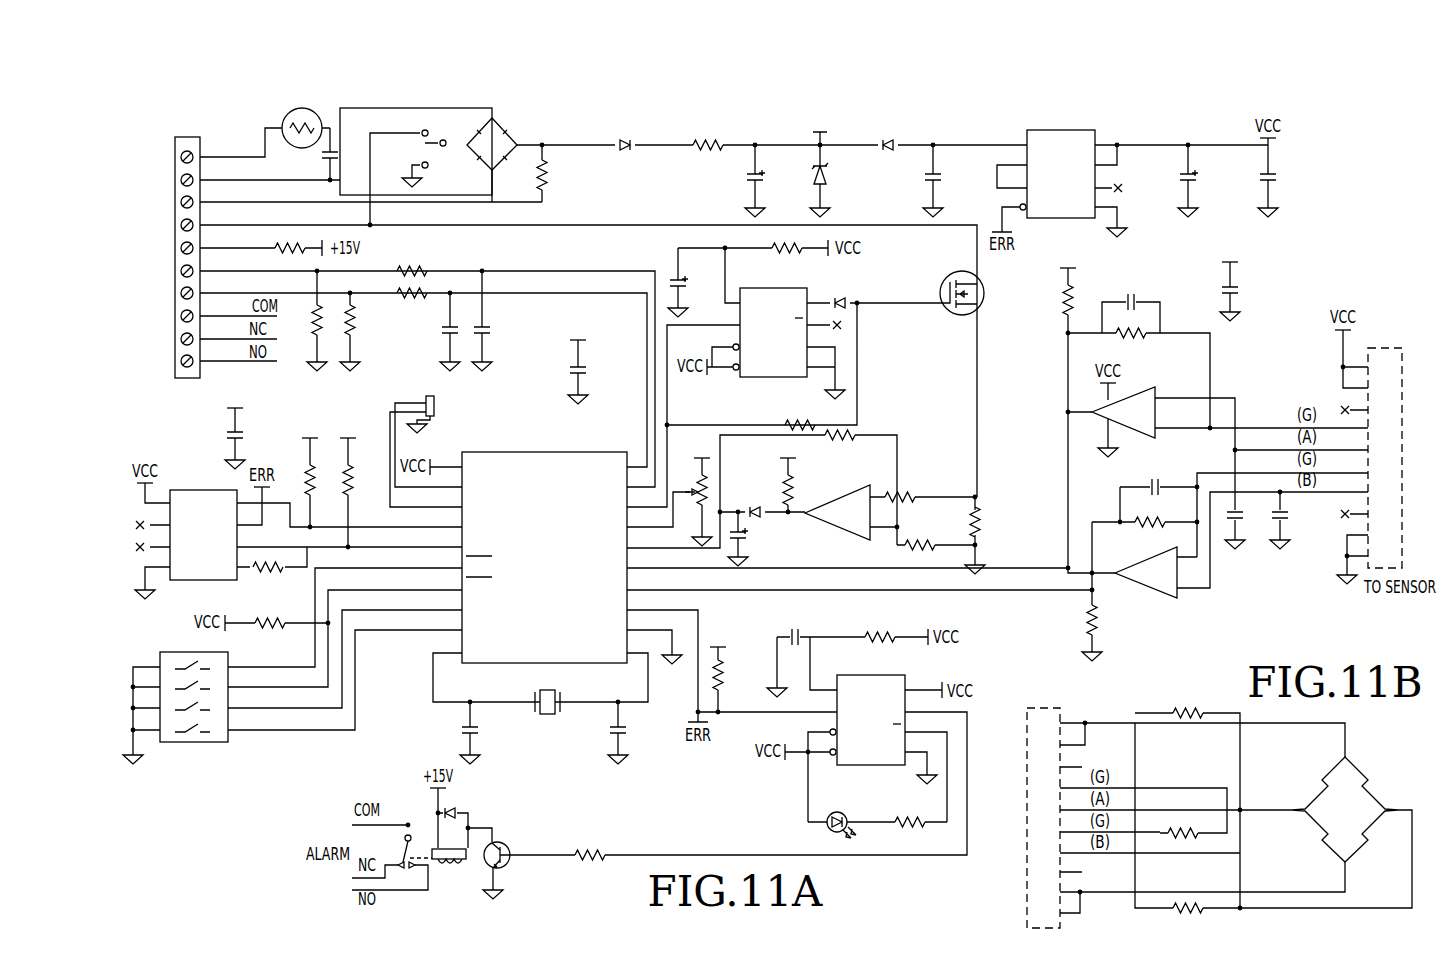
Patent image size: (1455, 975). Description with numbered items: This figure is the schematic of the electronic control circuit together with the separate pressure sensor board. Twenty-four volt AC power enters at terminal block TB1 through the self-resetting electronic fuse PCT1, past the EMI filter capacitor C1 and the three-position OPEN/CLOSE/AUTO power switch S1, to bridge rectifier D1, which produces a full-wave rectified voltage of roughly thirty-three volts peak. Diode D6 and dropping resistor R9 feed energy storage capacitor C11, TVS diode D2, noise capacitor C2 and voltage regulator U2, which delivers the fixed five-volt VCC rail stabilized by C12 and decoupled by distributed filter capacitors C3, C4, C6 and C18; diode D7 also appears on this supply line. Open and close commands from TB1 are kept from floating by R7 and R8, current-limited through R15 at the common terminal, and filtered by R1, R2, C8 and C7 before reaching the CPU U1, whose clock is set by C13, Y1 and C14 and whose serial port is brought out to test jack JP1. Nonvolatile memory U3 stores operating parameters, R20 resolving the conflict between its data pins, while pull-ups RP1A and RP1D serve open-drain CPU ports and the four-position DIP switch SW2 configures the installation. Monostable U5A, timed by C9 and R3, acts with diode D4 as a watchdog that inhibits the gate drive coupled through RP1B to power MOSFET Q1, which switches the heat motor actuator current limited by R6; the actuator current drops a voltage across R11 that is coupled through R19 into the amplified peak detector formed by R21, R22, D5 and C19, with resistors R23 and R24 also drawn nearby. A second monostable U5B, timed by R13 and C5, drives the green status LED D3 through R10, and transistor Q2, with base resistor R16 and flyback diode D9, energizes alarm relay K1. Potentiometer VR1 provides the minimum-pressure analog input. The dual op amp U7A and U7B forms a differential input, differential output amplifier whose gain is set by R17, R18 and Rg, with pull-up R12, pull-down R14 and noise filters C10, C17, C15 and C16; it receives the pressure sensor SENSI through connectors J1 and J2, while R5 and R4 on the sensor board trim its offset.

In FIG. 11A, the terminal block TB1 is at (175, 257).
In FIG. 11A, the electronic fuse PCT1 is at (298, 125).
In FIG. 11A, the EMI filter capacitor C1 is at (345, 154).
In FIG. 11A, the three position power switch S1 is at (416, 151).
In FIG. 11A, the bridge rectifier D1 is at (495, 156).
In FIG. 11A, the current limiting resistor R6 is at (557, 176).
In FIG. 11A, the blocking diode D6 is at (624, 126).
In FIG. 11A, the voltage-dropping resistor R9 is at (708, 134).
In FIG. 11A, the energy storage capacitor C11 is at (777, 176).
In FIG. 11A, the transient voltage suppressor diode D2 is at (842, 170).
In FIG. 11A, the zener diode D7 is at (888, 134).
In FIG. 11A, the noise suppression capacitor C2 is at (948, 176).
In FIG. 11A, the voltage regulator U2 is at (963, 446).
In FIG. 11A, the energy storage capacitor C12 is at (1209, 176).
In FIG. 11A, the distributed filter capacitor C3 is at (1281, 173).
In FIG. 11A, the current limiting resistor R15 is at (289, 248).
In FIG. 11A, the filter resistor R1 is at (412, 251).
In FIG. 11A, the filter resistor R2 is at (412, 312).
In FIG. 11A, the pull-down resistor R7 is at (329, 316).
In FIG. 11A, the pull-down resistor R8 is at (362, 327).
In FIG. 11A, the filter capacitor C7 is at (436, 327).
In FIG. 11A, the filter capacitor C8 is at (495, 316).
In FIG. 11A, the timing resistor R3 is at (787, 248).
In FIG. 11A, the timing capacitor C9 is at (697, 280).
In FIG. 11A, the retriggerable monostable multivibrator U5A is at (780, 332).
In FIG. 11A, the diode D4 is at (843, 283).
In FIG. 11A, the gate coupling resistor RP1B is at (588, 474).
In FIG. 11A, the N channel power MOSFET Q1 is at (954, 309).
In FIG. 11A, the pull-up resistor R12 is at (1082, 280).
In FIG. 11A, the noise filter capacitor C10 is at (1132, 293).
In FIG. 11A, the gain setting resistor R17 is at (1131, 331).
In FIG. 11A, the distributed filter capacitor C4 is at (1243, 275).
In FIG. 11A, the distributed filter capacitor C18 is at (593, 356).
In FIG. 11A, the test jack JP1 is at (439, 404).
In FIG. 11A, the CPU U1 is at (544, 546).
In FIG. 11A, the distributed filter capacitor C6 is at (247, 422).
In FIG. 11A, the nonvolatile memory device U3 is at (193, 535).
In FIG. 11A, the pull-up resistor RP1A is at (324, 471).
In FIG. 11A, the conflict resolving resistor R20 is at (270, 576).
In FIG. 11A, the pull-up resistor RP1D is at (270, 621).
In FIG. 11A, the four position DIP switch SW2 is at (194, 698).
In FIG. 11A, the potentiometer VR1 is at (692, 486).
In FIG. 11A, the peak detector diode D5 is at (752, 491).
In FIG. 11A, the peak detector capacitor C19 is at (769, 536).
In FIG. 11A, the resistor R24 is at (802, 473).
In FIG. 11A, the gain resistor R21 is at (845, 443).
In FIG. 11A, the retriggerable monostable multivibrator U5B is at (843, 509).
In FIG. 11A, the input resistor R19 is at (911, 495).
In FIG. 11A, the gain resistor R22 is at (920, 543).
In FIG. 11A, the current sense resistor R11 is at (994, 519).
In FIG. 11A, the resistor R23 is at (733, 668).
In FIG. 11A, the timing capacitor C5 is at (798, 633).
In FIG. 11A, the timing resistor R13 is at (879, 636).
In FIG. 11A, the green status LED D3 is at (828, 817).
In FIG. 11A, the LED current resistor R10 is at (907, 820).
In FIG. 11A, the flyback diode D9 is at (485, 802).
In FIG. 11A, the alarm relay K1 is at (449, 856).
In FIG. 11A, the switching transistor Q2 is at (524, 857).
In FIG. 11A, the base resistor R16 is at (589, 853).
In FIG. 11A, the crystal load capacitor C13 is at (452, 728).
In FIG. 11A, the crystal load capacitor C14 is at (636, 728).
In FIG. 11A, the crystal Y1 is at (548, 726).
In FIG. 11A, the operational amplifier U7A is at (1120, 412).
In FIG. 11A, the noise filter capacitor C17 is at (1154, 479).
In FIG. 11A, the gain setting resistor R18 is at (1150, 520).
In FIG. 11A, the operational amplifier U7B is at (1143, 571).
In FIG. 11A, the pull-down resistor R14 is at (1110, 621).
In FIG. 11A, the noise filter capacitor C15 is at (1252, 522).
In FIG. 11A, the noise filter capacitor C16 is at (1297, 522).
In FIG. 11A, the power connector J1 is at (1371, 446).
In FIG. 11B, the signal connector J2 is at (1043, 805).
In FIG. 11B, the offset trim resistor R5 is at (1190, 703).
In FIG. 11B, the offset trim resistor R4 is at (1190, 917).
In FIG. 11B, the gain resistor Rg is at (1183, 823).
In FIG. 11B, the pressure sensor SENSI is at (1344, 807).